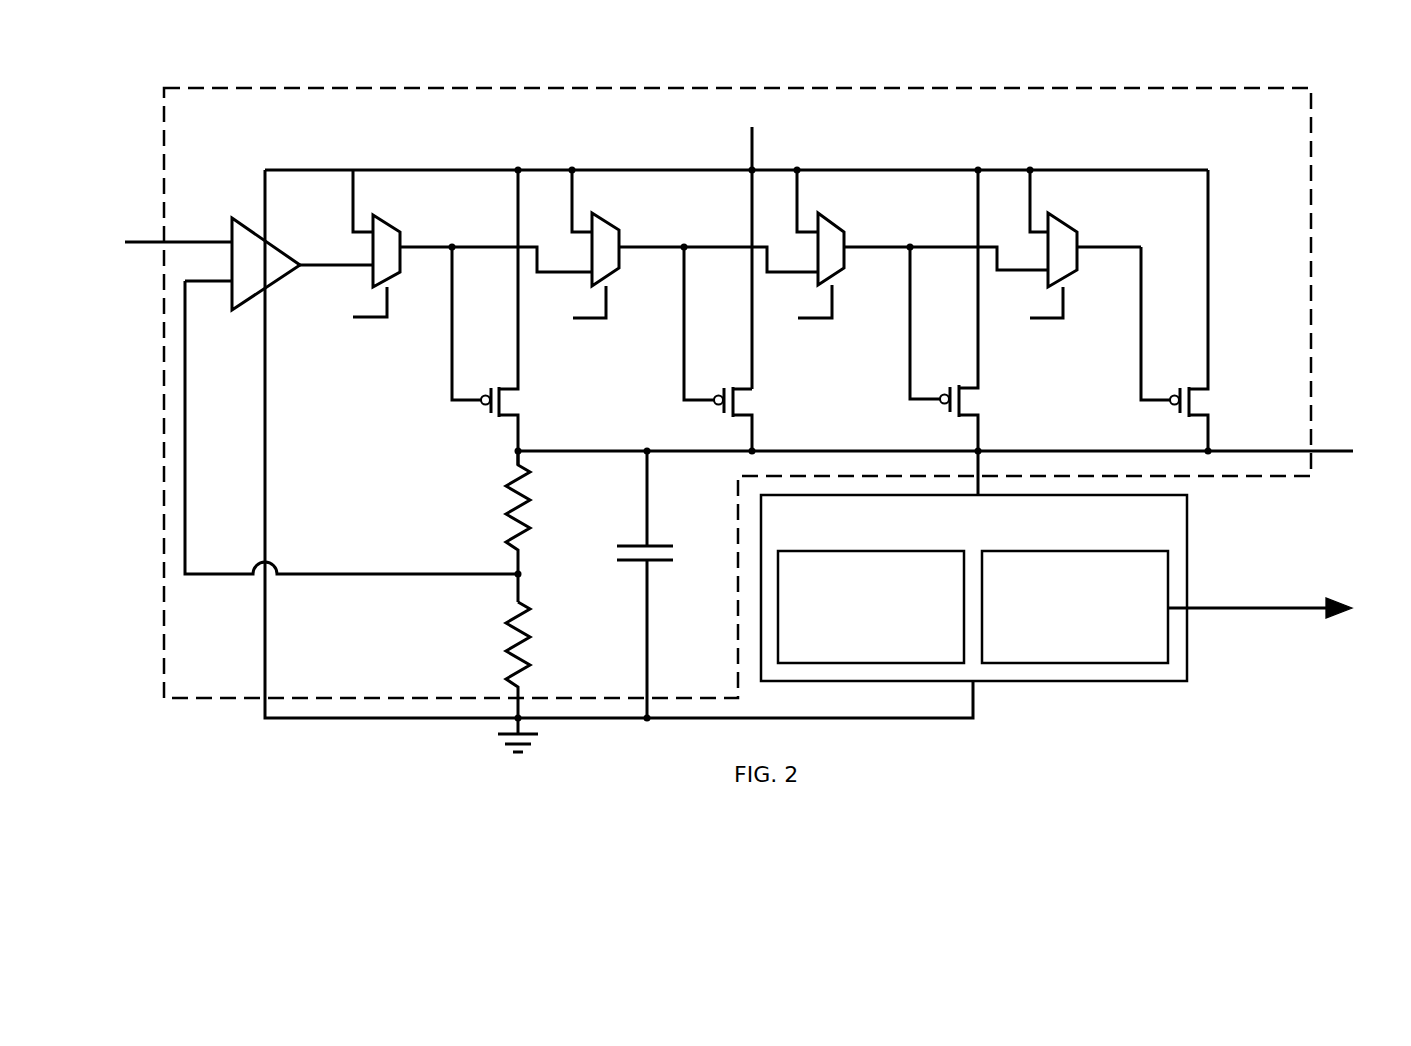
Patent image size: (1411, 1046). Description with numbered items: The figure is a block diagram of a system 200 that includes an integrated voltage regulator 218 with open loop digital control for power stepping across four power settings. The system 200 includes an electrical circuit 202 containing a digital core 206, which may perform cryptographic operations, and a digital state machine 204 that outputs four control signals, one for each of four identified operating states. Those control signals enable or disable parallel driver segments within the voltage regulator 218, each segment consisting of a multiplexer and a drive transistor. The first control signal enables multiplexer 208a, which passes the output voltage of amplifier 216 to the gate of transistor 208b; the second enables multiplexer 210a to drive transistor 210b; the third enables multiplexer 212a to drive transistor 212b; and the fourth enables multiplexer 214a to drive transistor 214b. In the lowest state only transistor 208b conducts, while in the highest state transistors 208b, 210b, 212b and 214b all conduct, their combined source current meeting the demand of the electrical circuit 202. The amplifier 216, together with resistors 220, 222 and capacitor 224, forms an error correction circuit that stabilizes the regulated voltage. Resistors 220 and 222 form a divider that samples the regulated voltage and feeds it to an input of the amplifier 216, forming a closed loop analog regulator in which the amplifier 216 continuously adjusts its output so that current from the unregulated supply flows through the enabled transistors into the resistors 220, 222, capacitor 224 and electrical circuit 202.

The system 200 is at (141, 125).
The electrical circuit 202 is at (1056, 588).
The digital state machine 204 is at (1075, 607).
The digital core 206 is at (871, 607).
The multiplexer 208a is at (375, 214).
The transistor 208b is at (506, 420).
The multiplexer 210a is at (592, 213).
The transistor 210b is at (753, 380).
The multiplexer 212a is at (820, 214).
The transistor 212b is at (978, 356).
The multiplexer 214a is at (1048, 213).
The transistor 214b is at (1208, 361).
The amplifier 216 is at (232, 218).
The voltage regulator 218 is at (1311, 88).
The resistor 220 is at (530, 507).
The resistor 222 is at (530, 647).
The capacitor 224 is at (650, 545).